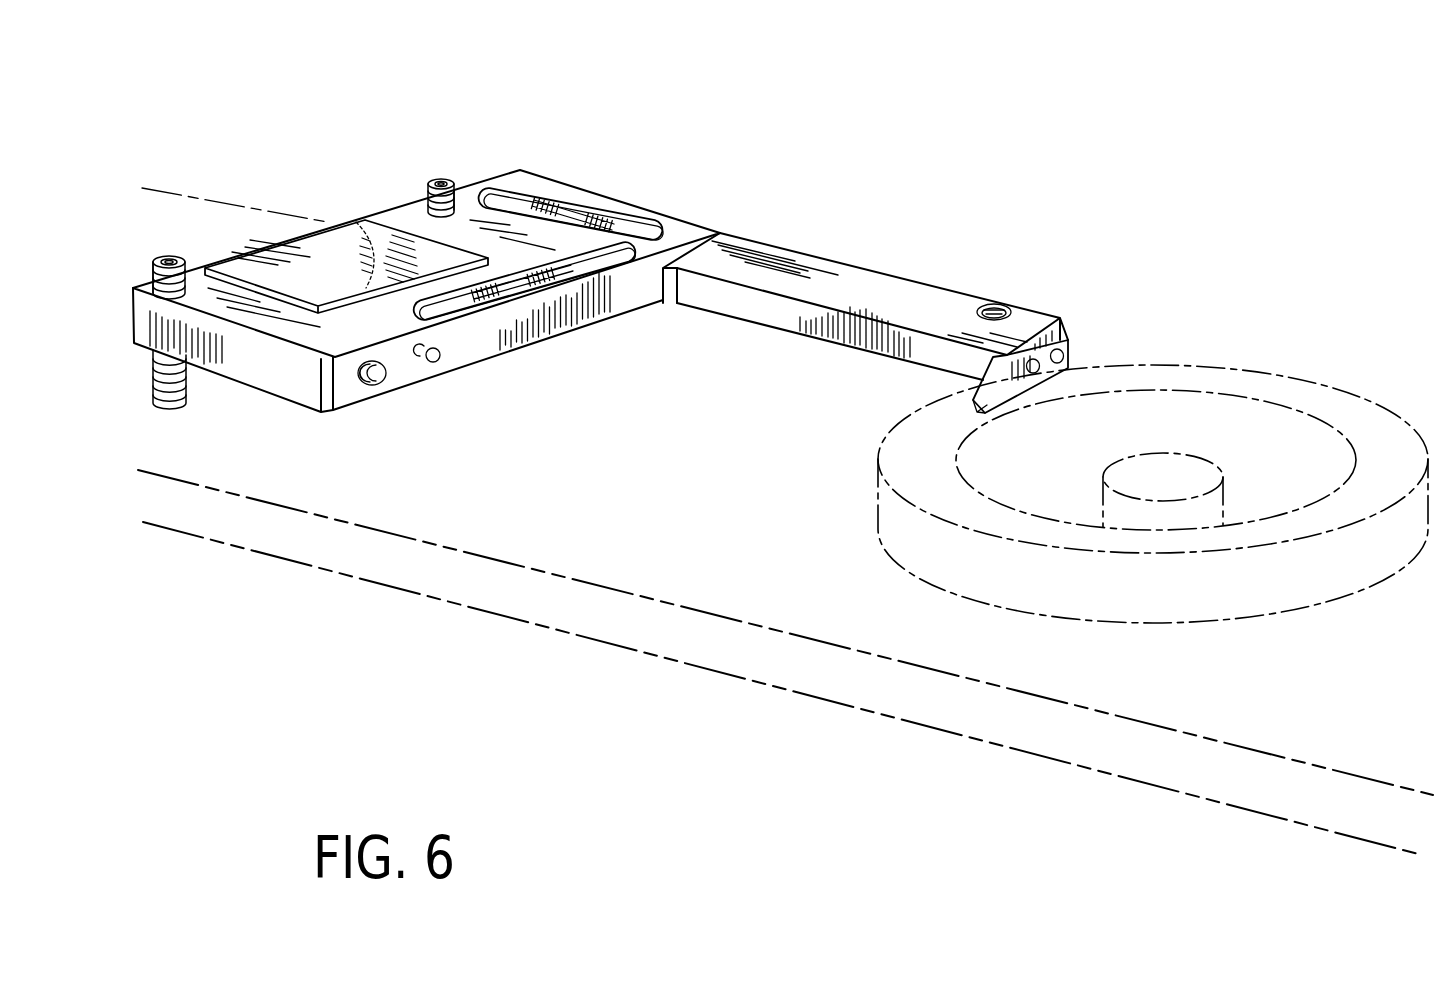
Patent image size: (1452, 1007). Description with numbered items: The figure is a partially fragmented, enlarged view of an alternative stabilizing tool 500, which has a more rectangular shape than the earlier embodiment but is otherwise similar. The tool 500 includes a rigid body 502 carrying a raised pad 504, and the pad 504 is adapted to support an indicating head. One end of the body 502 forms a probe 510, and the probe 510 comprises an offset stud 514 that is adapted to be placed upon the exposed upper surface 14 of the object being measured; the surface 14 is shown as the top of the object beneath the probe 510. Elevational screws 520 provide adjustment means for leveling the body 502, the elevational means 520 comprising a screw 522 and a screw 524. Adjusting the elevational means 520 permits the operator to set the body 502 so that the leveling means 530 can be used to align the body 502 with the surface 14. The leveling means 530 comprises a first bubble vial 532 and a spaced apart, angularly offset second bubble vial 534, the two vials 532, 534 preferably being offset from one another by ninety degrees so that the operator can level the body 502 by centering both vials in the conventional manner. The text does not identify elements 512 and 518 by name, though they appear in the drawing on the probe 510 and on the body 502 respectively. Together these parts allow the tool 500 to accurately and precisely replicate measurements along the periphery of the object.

The exposed upper surface 14 is at (1143, 365).
The stabilizing tool 500 is at (600, 261).
The rigid body 502 is at (396, 222).
The raised pad 504 is at (333, 237).
The probe 510 is at (872, 343).
The upper surface of arm 512 is at (888, 288).
The offset stud 514 is at (972, 415).
The pin 518 is at (425, 360).
The elevational screws 520 is at (182, 242).
The screw 522 is at (458, 193).
The screw 524 is at (150, 270).
The leveling means 530 is at (617, 277).
The first bubble vial 532 is at (470, 313).
The second bubble vial 534 is at (557, 210).